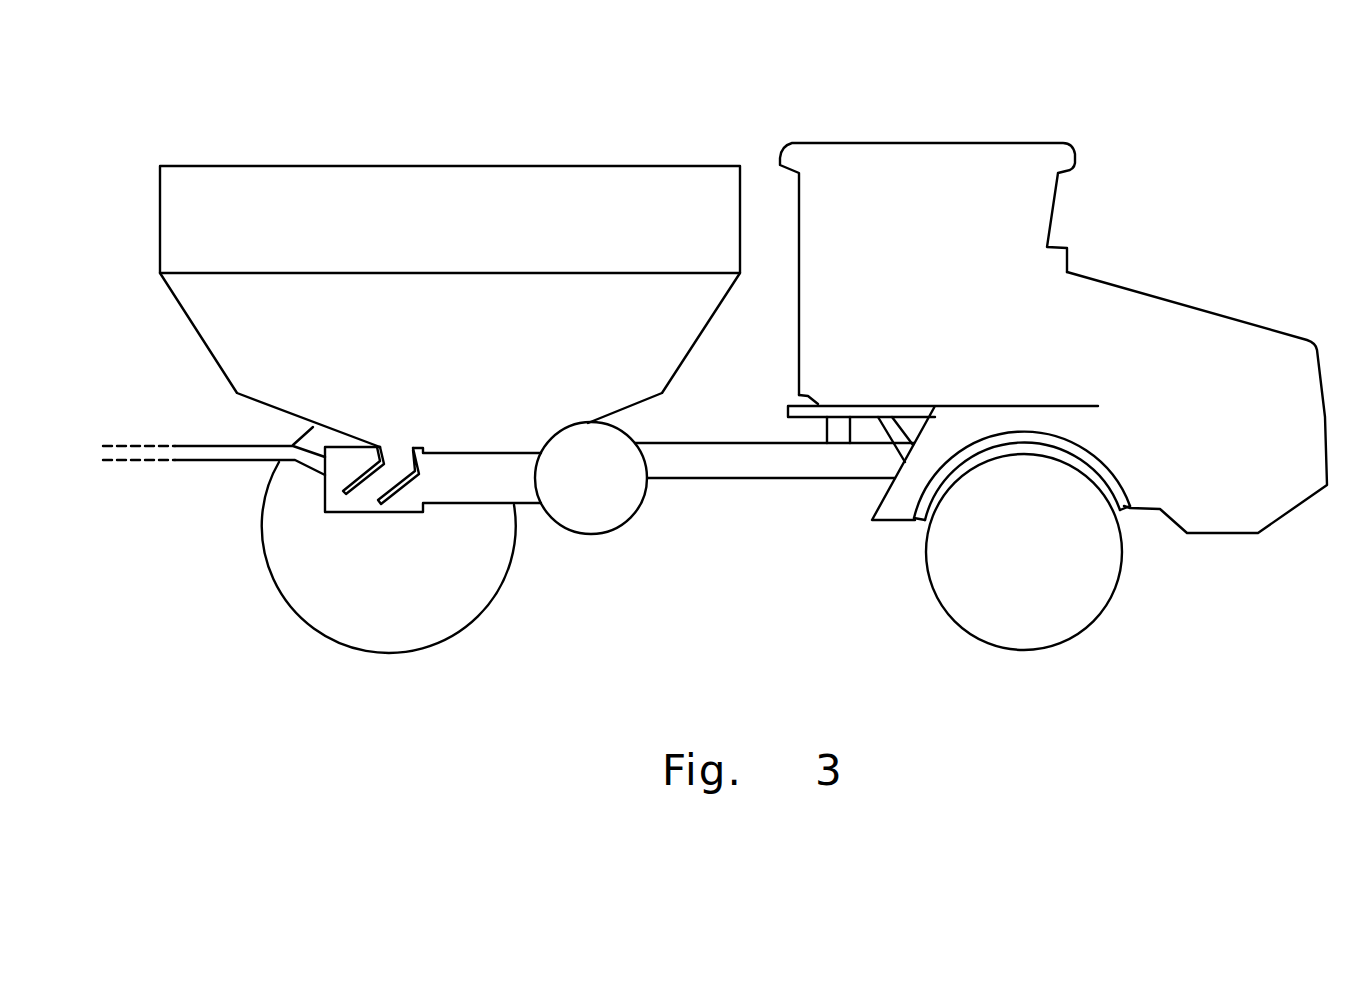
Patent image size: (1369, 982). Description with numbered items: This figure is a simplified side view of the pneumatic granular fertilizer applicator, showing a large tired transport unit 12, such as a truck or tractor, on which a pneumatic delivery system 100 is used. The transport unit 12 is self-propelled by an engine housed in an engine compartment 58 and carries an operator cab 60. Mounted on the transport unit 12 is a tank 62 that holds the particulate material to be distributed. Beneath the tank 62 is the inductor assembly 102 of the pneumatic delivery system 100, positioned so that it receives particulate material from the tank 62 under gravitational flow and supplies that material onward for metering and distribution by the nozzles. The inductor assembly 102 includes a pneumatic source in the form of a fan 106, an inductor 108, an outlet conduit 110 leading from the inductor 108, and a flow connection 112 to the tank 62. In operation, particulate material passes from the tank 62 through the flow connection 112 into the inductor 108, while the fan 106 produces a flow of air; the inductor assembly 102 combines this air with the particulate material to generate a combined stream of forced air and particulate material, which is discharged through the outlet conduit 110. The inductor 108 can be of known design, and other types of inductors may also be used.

The transport unit 12 is at (987, 122).
The engine compartment 58 is at (1217, 347).
The operator cab 60 is at (1028, 197).
The tank 62 is at (182, 202).
The pneumatic delivery system 100 is at (187, 430).
The inductor assembly 102 is at (313, 496).
The fan 106 is at (605, 507).
The inductor 108 is at (387, 483).
The outlet conduit 110 is at (193, 456).
The flow connection 112 is at (415, 450).